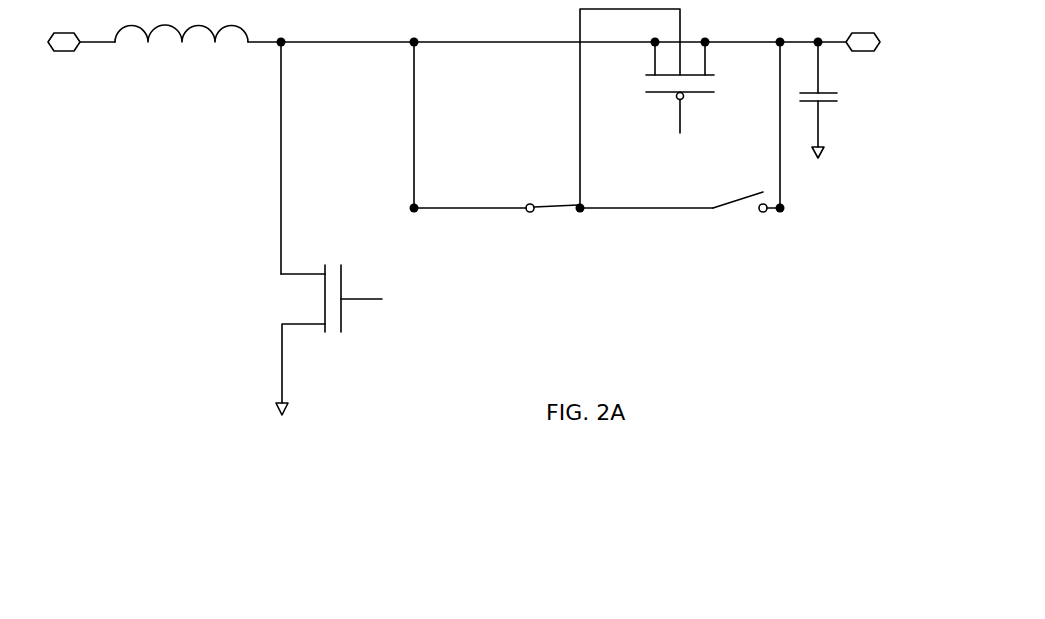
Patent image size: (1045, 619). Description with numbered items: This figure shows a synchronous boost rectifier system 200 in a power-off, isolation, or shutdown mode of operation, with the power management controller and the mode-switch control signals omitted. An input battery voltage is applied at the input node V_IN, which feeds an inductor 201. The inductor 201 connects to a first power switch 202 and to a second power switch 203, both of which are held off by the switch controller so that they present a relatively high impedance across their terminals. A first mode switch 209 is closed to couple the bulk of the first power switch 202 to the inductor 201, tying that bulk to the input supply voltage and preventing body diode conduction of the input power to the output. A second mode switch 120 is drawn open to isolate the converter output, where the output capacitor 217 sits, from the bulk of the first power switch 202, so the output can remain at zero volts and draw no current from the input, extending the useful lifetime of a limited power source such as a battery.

The synchronous boost rectifier system 200 is at (848, 184).
The inductor 201 is at (182, 45).
The first power switch 202 is at (697, 95).
The second power switch 203 is at (342, 316).
The first mode switch 209 is at (548, 204).
The switch 120 is at (739, 196).
The output capacitor 217 is at (825, 104).